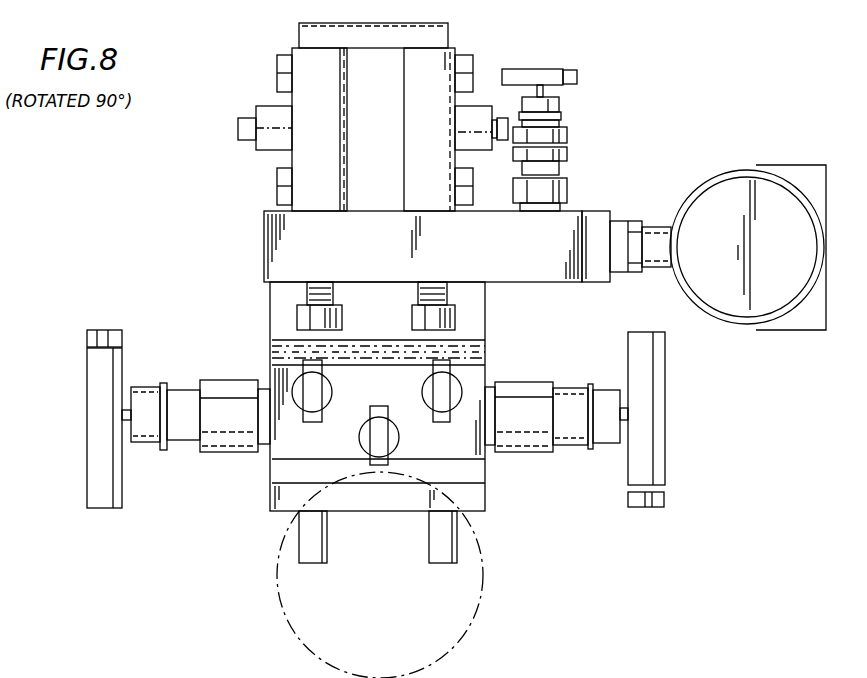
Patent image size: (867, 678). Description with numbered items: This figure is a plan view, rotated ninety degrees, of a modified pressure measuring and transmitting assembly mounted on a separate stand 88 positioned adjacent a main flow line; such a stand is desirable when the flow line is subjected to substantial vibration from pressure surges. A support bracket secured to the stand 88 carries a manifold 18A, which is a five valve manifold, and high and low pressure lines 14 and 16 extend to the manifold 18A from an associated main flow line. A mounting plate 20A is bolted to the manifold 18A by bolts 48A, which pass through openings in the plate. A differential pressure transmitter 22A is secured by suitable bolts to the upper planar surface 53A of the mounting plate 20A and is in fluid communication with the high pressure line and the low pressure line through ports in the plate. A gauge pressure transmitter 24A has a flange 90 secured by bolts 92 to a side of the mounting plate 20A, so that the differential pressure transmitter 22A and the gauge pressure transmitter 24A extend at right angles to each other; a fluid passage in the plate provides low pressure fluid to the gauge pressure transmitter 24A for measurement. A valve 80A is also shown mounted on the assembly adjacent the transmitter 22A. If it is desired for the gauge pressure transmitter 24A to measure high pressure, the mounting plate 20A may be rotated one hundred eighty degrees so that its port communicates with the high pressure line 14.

The differential pressure transmitter 22A is at (432, 37).
The upper planar surface 53A is at (372, 209).
The bleed valve 80A is at (561, 122).
The flange 90 is at (597, 212).
The bolts 92 is at (622, 256).
The gauge pressure transmitter 24A is at (734, 190).
The mounting plate 20A is at (263, 258).
The bolts 48A is at (456, 322).
The manifold 18A is at (271, 472).
The high pressure line 14 is at (306, 547).
The low pressure line 16 is at (449, 547).
The stand 88 is at (285, 620).